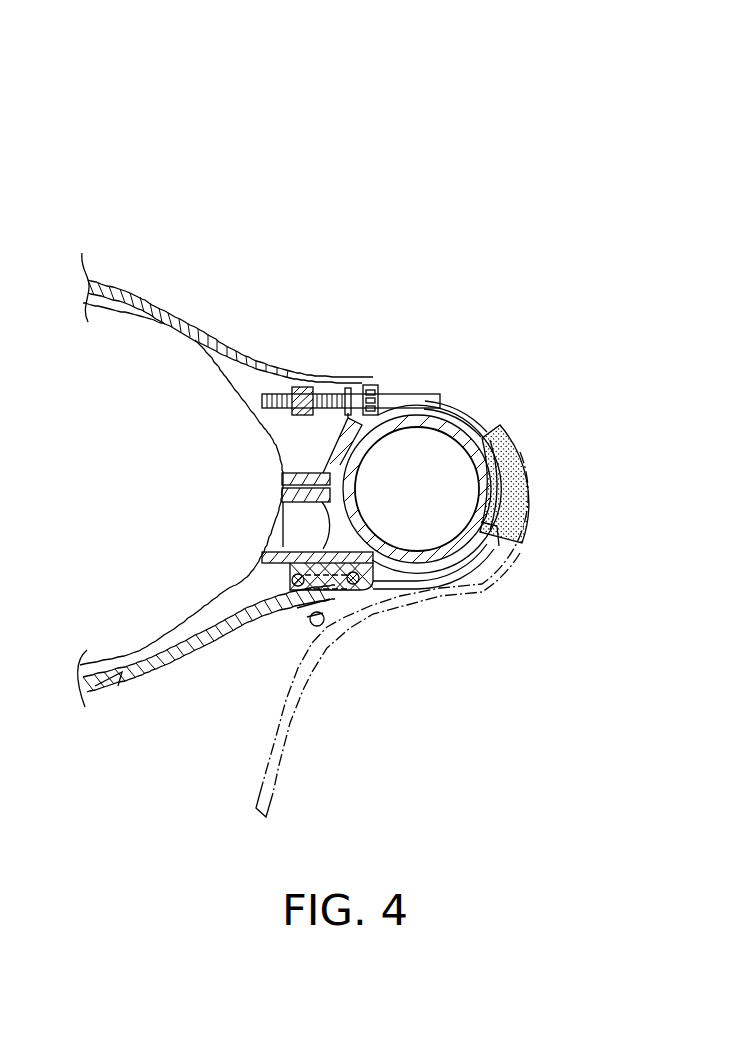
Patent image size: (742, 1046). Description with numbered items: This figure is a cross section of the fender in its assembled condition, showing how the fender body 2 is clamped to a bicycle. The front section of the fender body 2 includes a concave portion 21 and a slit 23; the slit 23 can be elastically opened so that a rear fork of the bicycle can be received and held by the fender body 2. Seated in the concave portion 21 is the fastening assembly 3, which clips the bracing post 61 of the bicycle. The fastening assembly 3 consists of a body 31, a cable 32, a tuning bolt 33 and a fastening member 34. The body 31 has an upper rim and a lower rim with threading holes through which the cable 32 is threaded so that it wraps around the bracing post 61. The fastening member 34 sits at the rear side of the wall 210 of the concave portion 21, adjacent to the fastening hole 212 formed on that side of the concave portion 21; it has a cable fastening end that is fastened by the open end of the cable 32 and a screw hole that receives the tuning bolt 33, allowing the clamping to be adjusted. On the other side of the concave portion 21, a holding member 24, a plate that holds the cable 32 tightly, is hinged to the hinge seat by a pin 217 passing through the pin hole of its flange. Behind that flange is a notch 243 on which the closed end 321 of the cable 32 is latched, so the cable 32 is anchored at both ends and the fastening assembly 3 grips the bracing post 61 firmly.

The fender body 2 is at (225, 444).
The concave portion 21 is at (330, 440).
The slit 23 is at (280, 512).
The holding member 24 is at (158, 664).
The fastening assembly 3 is at (523, 477).
The body 31 is at (512, 475).
The cable 32 is at (467, 410).
The tuning bolt 33 is at (332, 387).
The fastening member 34 is at (323, 393).
The bracing post 61 is at (438, 425).
The wall 210 is at (372, 385).
The fastening hole 212 is at (349, 387).
The pin 217 is at (362, 585).
The notch 243 is at (308, 614).
The closed end 321 is at (287, 583).